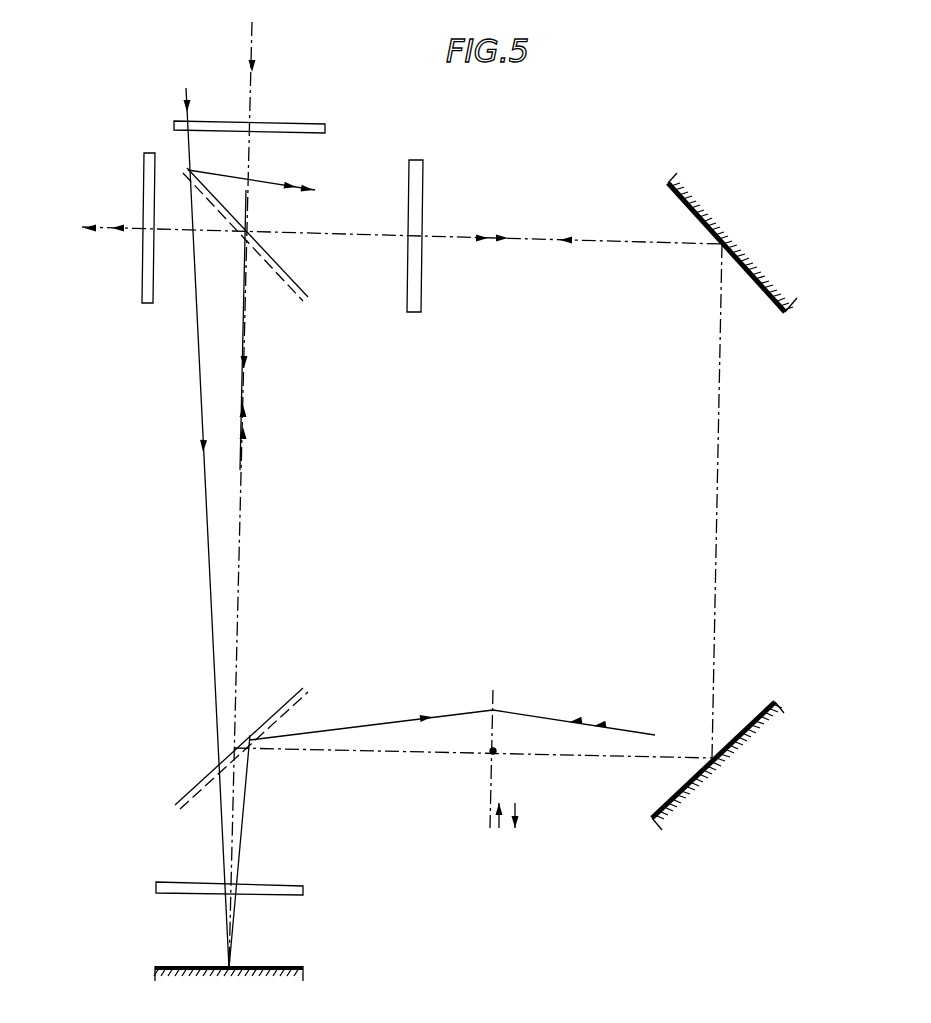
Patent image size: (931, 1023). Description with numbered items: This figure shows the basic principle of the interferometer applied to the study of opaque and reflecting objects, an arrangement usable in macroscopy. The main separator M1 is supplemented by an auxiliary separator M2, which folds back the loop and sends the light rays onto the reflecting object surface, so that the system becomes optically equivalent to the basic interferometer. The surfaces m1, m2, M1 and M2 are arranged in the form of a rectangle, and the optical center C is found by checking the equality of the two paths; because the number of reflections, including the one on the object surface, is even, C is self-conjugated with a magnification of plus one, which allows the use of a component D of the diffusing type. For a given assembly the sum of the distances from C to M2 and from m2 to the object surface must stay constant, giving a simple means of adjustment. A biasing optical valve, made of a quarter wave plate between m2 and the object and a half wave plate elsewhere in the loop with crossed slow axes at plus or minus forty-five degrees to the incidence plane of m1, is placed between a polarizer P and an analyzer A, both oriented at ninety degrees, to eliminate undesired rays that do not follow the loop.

The polarizer P is at (290, 122).
The analyzer A is at (137, 247).
The separator surface m1 is at (256, 250).
The auxiliary separator M2 is at (732, 242).
The main separator M1 is at (718, 766).
The separator surface m2 is at (250, 737).
The optical center C is at (494, 753).
The diffusing component D is at (490, 754).